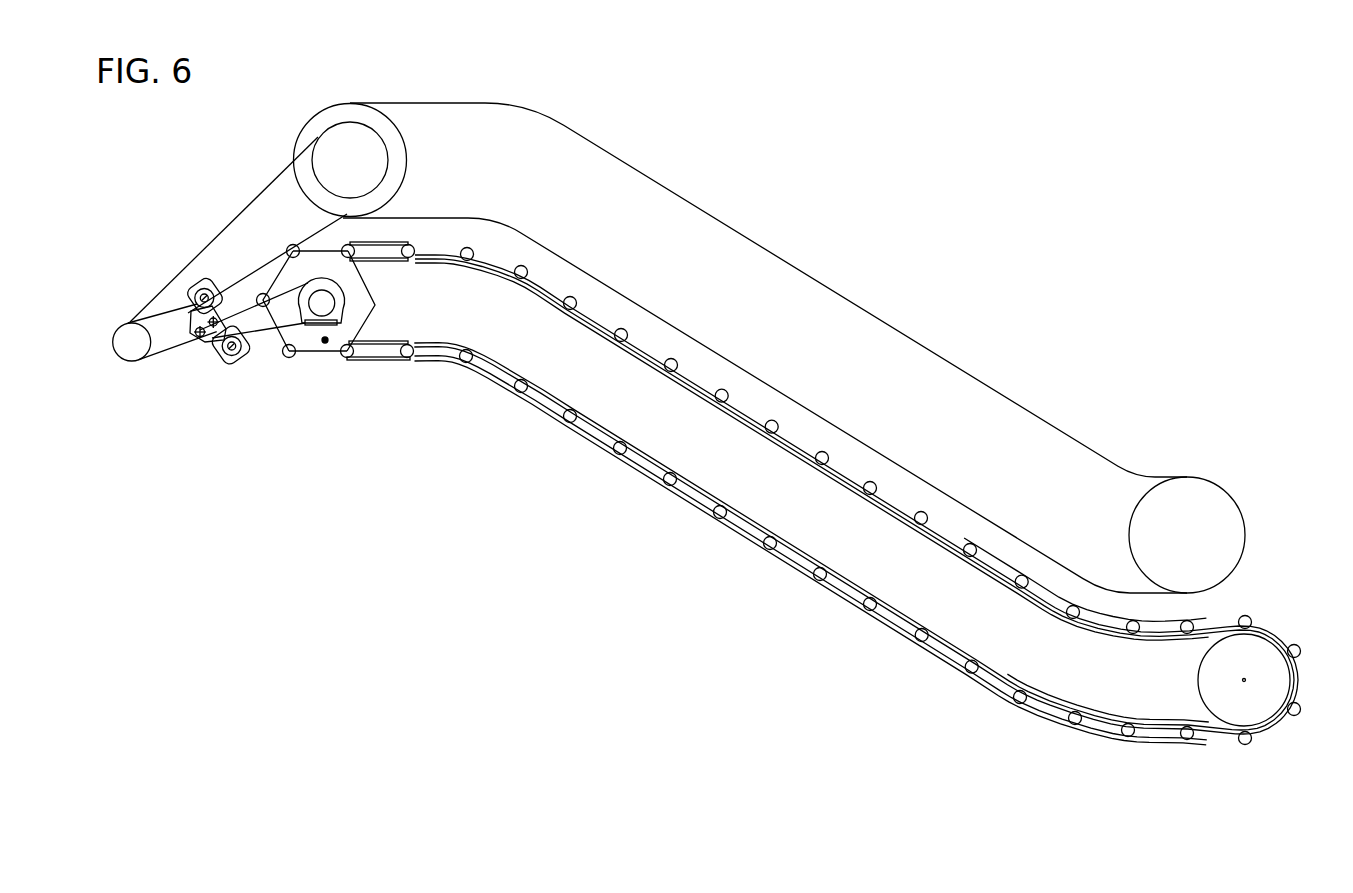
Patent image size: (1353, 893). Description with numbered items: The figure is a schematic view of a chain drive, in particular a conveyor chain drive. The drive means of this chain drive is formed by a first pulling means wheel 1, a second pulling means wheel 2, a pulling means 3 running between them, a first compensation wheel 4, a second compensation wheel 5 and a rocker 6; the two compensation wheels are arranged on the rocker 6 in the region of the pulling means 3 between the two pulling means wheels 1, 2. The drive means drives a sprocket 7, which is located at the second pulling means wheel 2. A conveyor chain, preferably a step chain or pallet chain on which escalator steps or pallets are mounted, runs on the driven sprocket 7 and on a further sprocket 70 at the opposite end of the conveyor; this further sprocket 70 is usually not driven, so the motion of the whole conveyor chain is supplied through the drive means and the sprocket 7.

The first pulling means wheel 1 is at (106, 350).
The second pulling means wheel 2 is at (306, 328).
The pulling means 3 is at (217, 340).
The first compensation wheel 4 is at (176, 287).
The second compensation wheel 5 is at (219, 360).
The rocker 6 is at (170, 310).
The sprocket 7 is at (340, 362).
The further sprocket 70 is at (1262, 710).